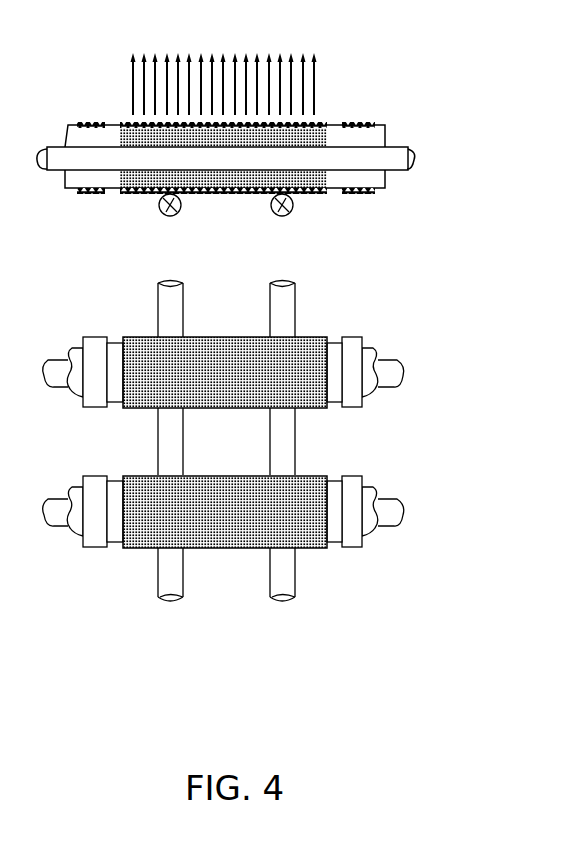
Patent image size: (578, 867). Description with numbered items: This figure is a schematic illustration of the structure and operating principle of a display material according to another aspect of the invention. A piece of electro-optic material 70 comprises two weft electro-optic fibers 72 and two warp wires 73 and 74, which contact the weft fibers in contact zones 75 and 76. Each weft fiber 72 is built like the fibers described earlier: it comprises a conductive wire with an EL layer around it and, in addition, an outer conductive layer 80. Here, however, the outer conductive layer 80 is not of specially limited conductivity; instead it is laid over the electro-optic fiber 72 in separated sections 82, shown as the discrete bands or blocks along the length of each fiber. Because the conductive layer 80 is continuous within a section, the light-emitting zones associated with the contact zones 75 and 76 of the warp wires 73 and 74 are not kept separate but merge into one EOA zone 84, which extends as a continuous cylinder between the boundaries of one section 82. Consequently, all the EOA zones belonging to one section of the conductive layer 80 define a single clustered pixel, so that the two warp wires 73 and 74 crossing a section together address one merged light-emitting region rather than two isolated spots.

The electro-optic material 70 is at (395, 337).
The weft electro-optic fiber 72 is at (420, 153).
The warp wire 73 is at (172, 216).
The warp wire 74 is at (284, 216).
The contact zone 75 is at (162, 194).
The contact zone 76 is at (290, 194).
The outer conductive layer 80 is at (360, 124).
The separated section 82 is at (352, 410).
The EOA zone 84 is at (213, 350).